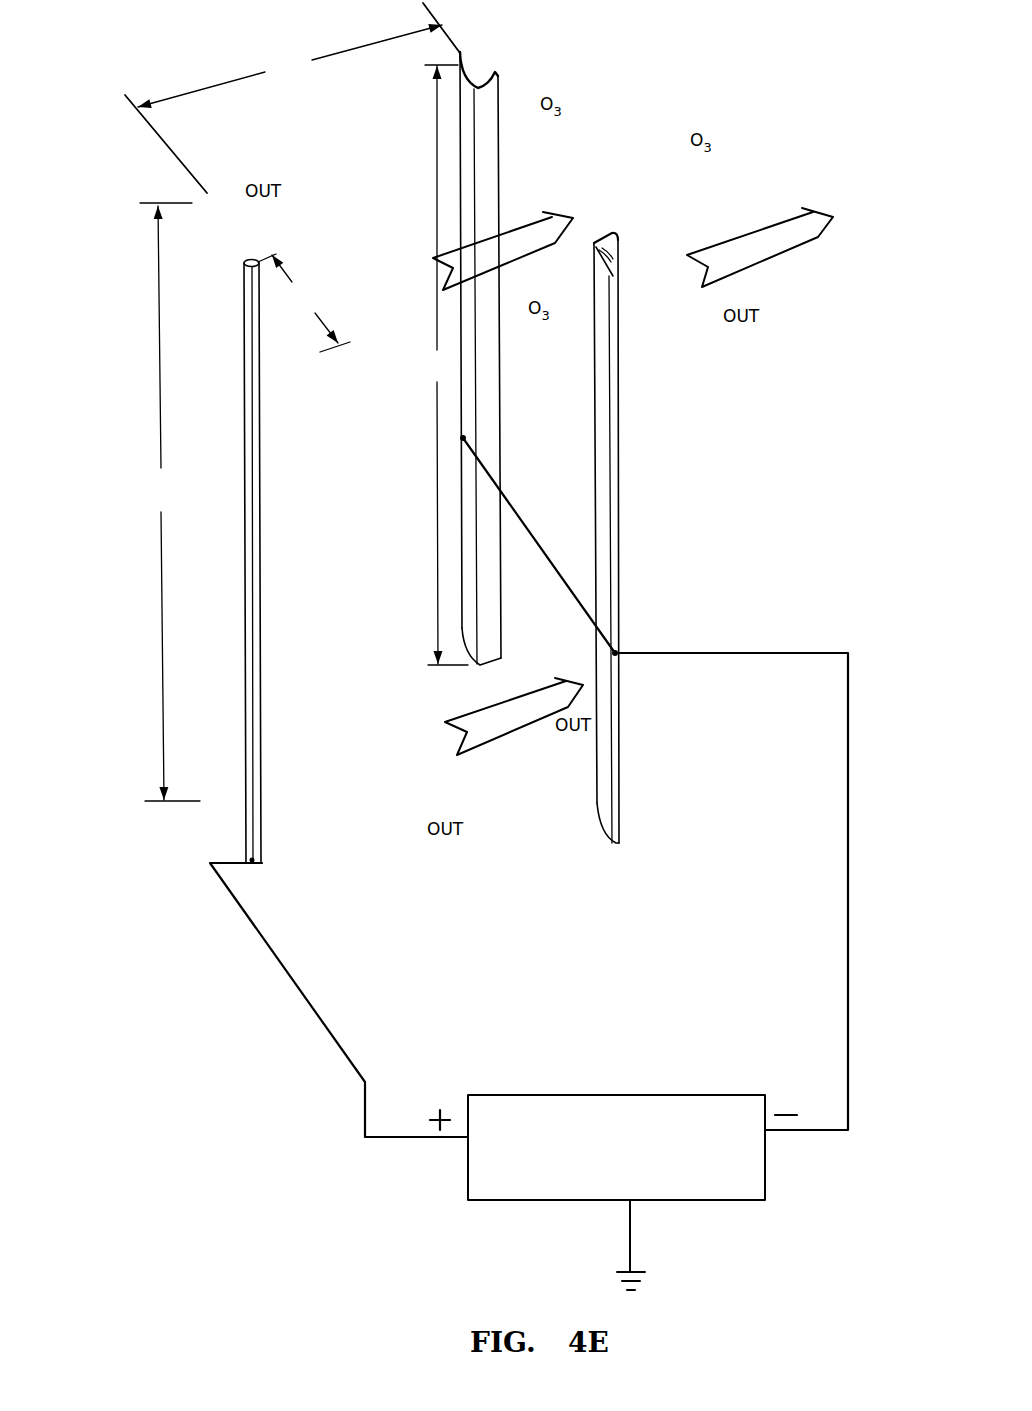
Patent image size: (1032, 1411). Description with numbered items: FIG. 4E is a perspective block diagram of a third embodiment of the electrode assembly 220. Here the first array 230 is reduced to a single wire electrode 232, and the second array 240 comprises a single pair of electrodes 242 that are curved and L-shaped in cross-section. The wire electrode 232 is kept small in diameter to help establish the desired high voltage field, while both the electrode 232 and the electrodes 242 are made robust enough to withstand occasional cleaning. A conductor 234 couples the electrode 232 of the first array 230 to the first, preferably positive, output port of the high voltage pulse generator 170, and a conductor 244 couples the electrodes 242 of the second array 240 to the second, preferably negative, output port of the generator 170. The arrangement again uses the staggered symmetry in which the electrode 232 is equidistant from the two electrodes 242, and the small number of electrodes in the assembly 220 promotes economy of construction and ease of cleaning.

The high voltage pulse generator 170 is at (633, 1090).
The electrode assembly 220 is at (176, 50).
The first array 230 is at (133, 397).
The wire electrode 232 is at (245, 578).
The conductor 234 is at (277, 967).
The second array 240 is at (388, 184).
The curved L-shaped electrode 242 is at (485, 172).
The conductor 244 is at (845, 988).